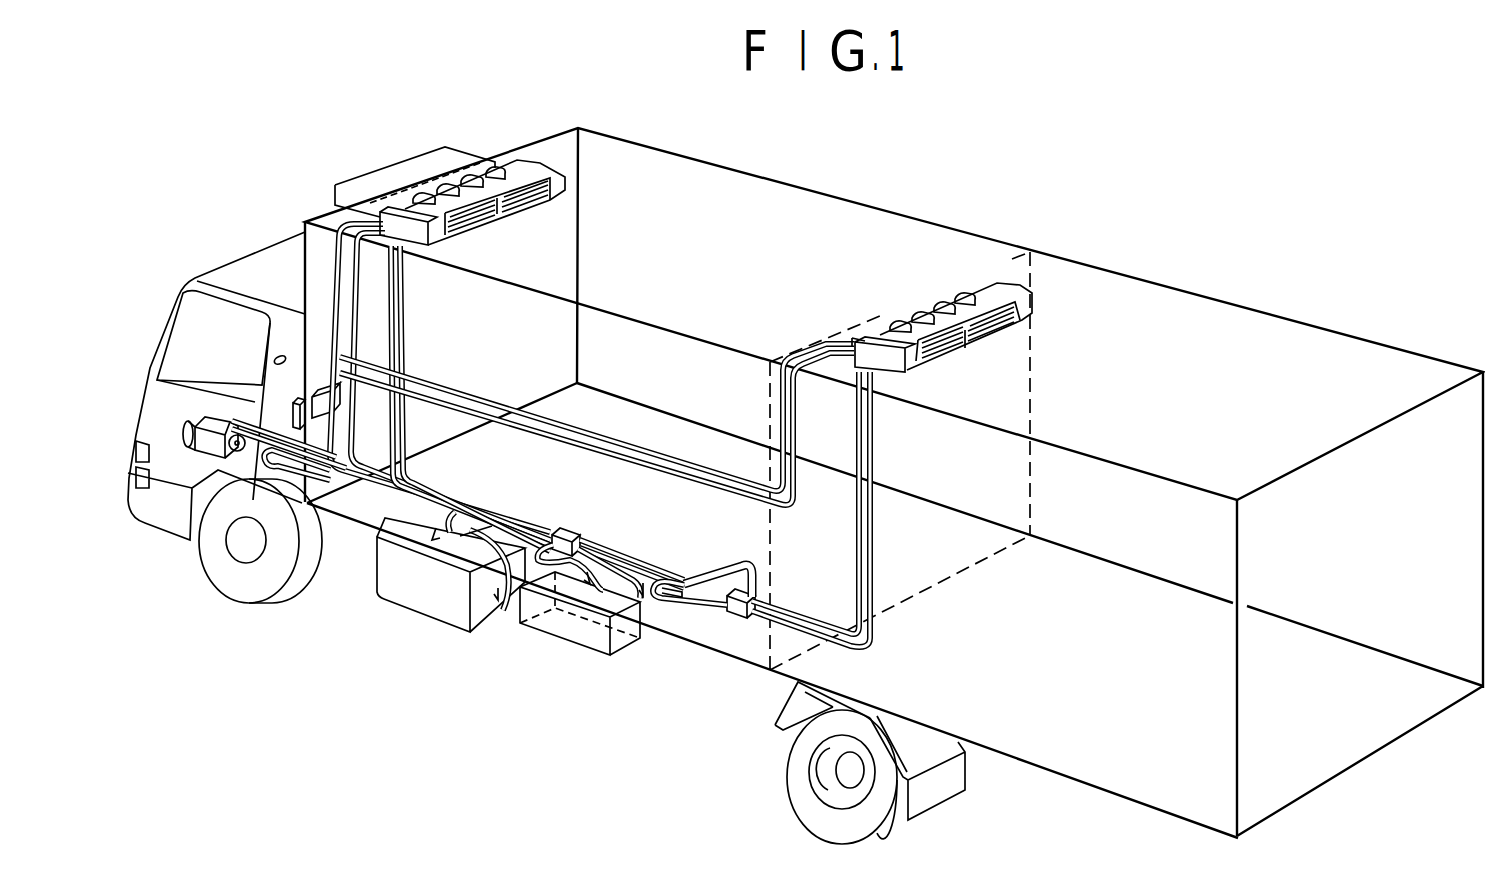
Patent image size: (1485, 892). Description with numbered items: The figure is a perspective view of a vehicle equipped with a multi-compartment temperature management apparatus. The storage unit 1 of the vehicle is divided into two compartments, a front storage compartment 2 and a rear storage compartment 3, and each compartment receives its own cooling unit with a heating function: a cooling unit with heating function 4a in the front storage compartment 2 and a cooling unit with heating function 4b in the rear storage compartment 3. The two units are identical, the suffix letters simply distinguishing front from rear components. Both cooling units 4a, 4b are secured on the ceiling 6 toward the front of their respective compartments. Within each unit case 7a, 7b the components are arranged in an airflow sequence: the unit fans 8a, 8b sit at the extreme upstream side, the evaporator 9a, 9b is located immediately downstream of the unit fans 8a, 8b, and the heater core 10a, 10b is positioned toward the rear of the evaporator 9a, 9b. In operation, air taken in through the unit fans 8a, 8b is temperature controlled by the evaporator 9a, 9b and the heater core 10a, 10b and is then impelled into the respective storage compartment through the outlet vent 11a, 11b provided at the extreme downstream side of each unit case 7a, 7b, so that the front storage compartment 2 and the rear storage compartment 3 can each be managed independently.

The storage unit 1 is at (950, 228).
The front storage compartment 2 is at (699, 285).
The rear storage compartment 3 is at (1199, 440).
The ceiling 6 is at (882, 233).
The cooling unit with heating function 4a is at (492, 213).
The cooling unit with heating function 4b is at (975, 331).
The unit case 7a is at (418, 246).
The unit case 7b is at (892, 374).
The unit fans 8a is at (418, 196).
The unit fans 8b is at (940, 308).
The evaporator 9a is at (506, 170).
The evaporator 9b is at (905, 335).
The heater core 10a is at (492, 234).
The heater core 10b is at (953, 337).
The outlet vent 11a is at (553, 200).
The outlet vent 11b is at (1022, 338).